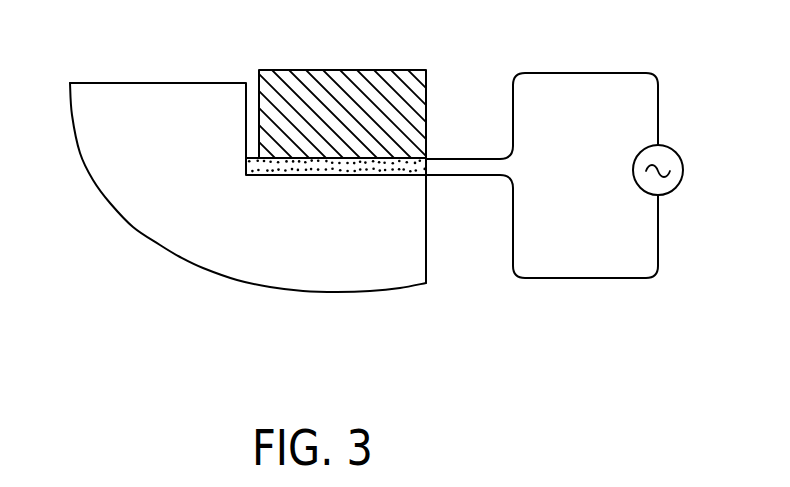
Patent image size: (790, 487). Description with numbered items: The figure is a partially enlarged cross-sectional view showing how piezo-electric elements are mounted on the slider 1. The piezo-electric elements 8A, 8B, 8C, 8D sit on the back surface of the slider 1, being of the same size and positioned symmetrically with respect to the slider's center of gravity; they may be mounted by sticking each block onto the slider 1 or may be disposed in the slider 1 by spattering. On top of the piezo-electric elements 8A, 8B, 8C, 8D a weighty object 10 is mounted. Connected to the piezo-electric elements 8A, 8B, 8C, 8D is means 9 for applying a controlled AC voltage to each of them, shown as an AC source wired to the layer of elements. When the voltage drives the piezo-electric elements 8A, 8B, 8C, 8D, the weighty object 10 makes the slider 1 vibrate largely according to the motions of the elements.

The slider 1 is at (388, 271).
The piezo-electric element 8A is at (297, 199).
The piezo-electric element 8B is at (319, 165).
The piezo-electric element 8C is at (366, 166).
The piezo-electric element 8D is at (408, 166).
The weighty object 10 is at (385, 74).
The means for applying a controlled AC voltage 9 is at (683, 163).